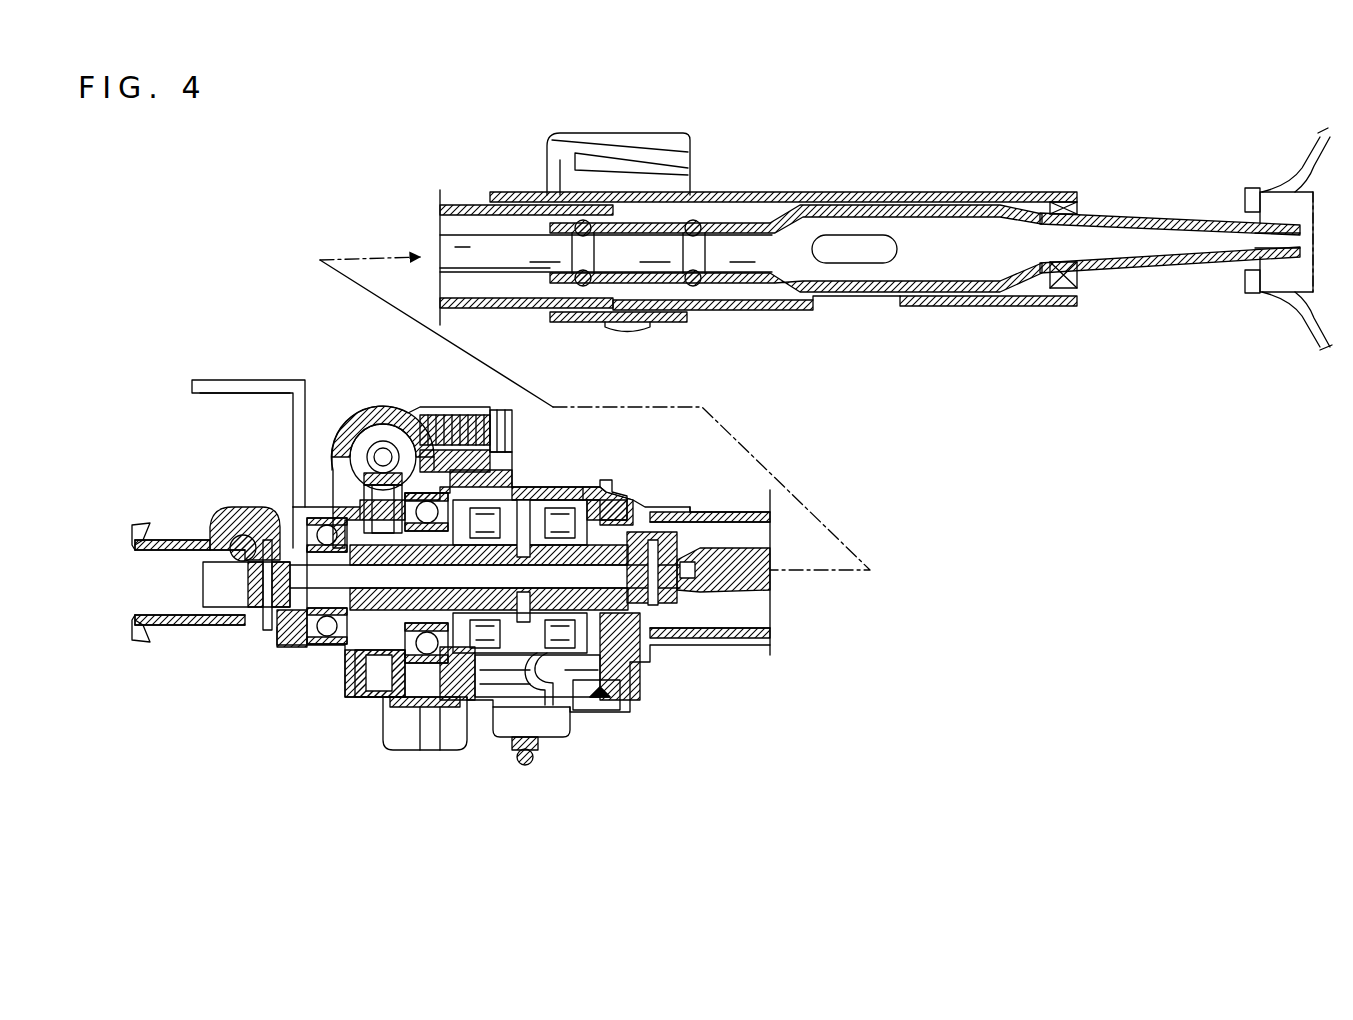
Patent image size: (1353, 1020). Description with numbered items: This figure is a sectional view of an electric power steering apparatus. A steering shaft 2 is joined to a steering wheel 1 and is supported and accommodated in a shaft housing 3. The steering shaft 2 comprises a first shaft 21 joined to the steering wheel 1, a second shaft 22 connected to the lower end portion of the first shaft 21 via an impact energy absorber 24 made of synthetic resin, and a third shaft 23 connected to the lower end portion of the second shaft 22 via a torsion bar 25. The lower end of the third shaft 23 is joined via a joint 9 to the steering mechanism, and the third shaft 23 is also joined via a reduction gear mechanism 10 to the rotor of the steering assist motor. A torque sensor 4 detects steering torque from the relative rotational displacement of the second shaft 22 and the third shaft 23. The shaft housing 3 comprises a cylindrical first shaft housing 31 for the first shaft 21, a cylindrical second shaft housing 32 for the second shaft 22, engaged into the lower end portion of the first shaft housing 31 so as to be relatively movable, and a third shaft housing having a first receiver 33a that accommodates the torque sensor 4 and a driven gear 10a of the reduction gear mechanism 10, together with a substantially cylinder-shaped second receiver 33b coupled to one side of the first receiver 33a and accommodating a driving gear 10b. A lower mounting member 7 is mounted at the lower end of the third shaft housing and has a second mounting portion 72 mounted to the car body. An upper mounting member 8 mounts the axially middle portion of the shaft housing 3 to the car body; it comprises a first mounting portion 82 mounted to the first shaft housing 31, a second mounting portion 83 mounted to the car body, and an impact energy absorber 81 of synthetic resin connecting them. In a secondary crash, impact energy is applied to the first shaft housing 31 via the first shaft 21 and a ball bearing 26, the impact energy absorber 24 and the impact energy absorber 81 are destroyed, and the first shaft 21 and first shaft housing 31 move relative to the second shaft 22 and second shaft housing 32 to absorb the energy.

The steering wheel 1 is at (1290, 340).
The steering shaft 2 is at (870, 241).
The shaft housing 3 is at (749, 217).
The torque sensor 4 is at (500, 731).
The lower mounting member 7 is at (241, 398).
The upper mounting member 8 is at (593, 219).
The joint 9 is at (170, 530).
The reduction gear mechanism 10 is at (486, 532).
The driven gear 10a is at (387, 703).
The driving gear 10b is at (382, 440).
The first shaft 21 is at (1152, 276).
The second shaft 22 is at (453, 270).
The third shaft 23 is at (280, 640).
The impact energy absorber 24 is at (583, 282).
The torsion bar 25 is at (612, 503).
The ball bearing 26 is at (1059, 195).
The first shaft housing 31 is at (878, 192).
The second shaft housing 32 is at (466, 200).
The first receiver 33a is at (420, 707).
The second receiver 33b is at (347, 423).
The second mounting portion 72 is at (206, 380).
The impact energy absorber 81 is at (563, 158).
The first mounting portion 82 is at (638, 320).
The second mounting portion 83 is at (586, 138).